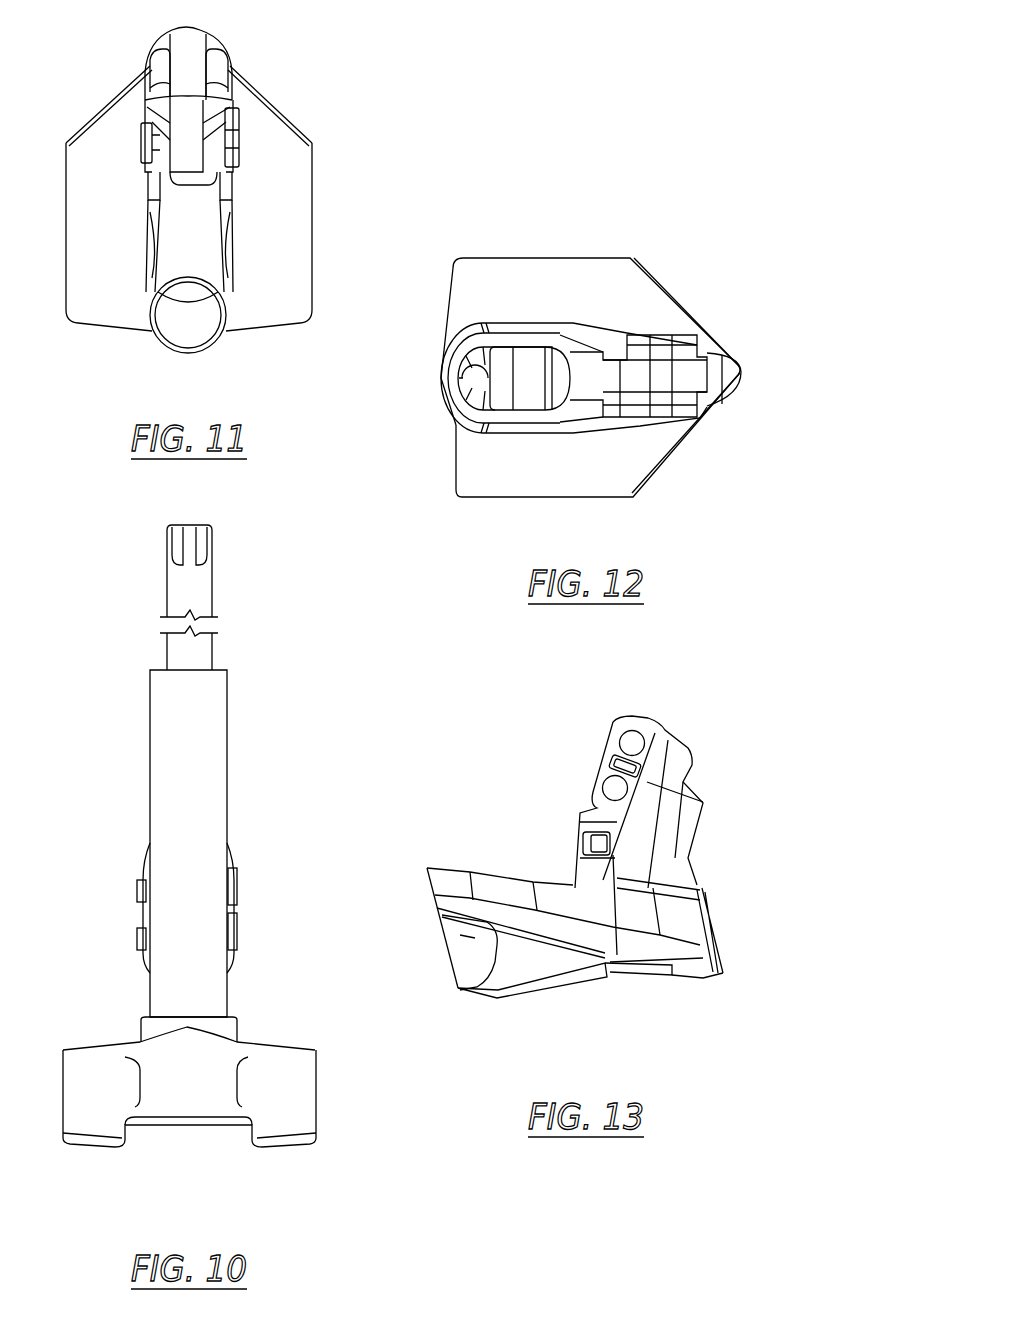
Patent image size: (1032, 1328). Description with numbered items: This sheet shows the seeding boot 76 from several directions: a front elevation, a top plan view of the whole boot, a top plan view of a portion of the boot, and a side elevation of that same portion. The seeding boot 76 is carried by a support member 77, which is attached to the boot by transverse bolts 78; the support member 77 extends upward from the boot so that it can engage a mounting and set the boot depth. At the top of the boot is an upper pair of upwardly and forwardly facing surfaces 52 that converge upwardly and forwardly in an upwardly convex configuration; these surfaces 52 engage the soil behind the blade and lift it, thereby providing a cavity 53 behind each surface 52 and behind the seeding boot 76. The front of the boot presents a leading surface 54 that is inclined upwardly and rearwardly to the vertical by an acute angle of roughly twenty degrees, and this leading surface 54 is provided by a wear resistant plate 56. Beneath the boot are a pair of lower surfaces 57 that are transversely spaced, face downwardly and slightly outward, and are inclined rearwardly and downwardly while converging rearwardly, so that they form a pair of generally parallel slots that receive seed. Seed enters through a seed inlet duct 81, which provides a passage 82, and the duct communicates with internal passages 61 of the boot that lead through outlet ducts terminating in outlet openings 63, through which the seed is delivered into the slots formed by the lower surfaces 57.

In FIG. 11, the upwardly and forwardly facing surfaces 52 is at (125, 219).
In FIG. 12, the upwardly and forwardly facing surfaces 52 is at (580, 312).
In FIG. 13, the upwardly and forwardly facing surfaces 52 is at (698, 936).
In FIG. 10, the cavity 53 is at (247, 1080).
In FIG. 13, the cavity 53 is at (473, 965).
In FIG. 11, the leading surface 54 is at (196, 38).
In FIG. 12, the leading surface 54 is at (735, 372).
In FIG. 13, the leading surface 54 is at (717, 908).
In FIG. 13, the wear resistant plate 56 is at (637, 968).
In FIG. 10, the lower surfaces 57 is at (95, 1144).
In FIG. 13, the lower surfaces 57 is at (575, 988).
In FIG. 12, the internal passages 61 is at (445, 402).
In FIG. 13, the outlet openings 63 is at (483, 939).
In FIG. 11, the seeding boot 76 is at (330, 209).
In FIG. 12, the seeding boot 76 is at (568, 226).
In FIG. 10, the seeding boot 76 is at (267, 944).
In FIG. 10, the support member 77 is at (204, 587).
In FIG. 11, the transverse bolts 78 is at (236, 150).
In FIG. 11, the seed inlet duct 81 is at (160, 348).
In FIG. 12, the seed inlet duct 81 is at (458, 413).
In FIG. 11, the passage 82 is at (198, 322).
In FIG. 12, the passage 82 is at (465, 380).